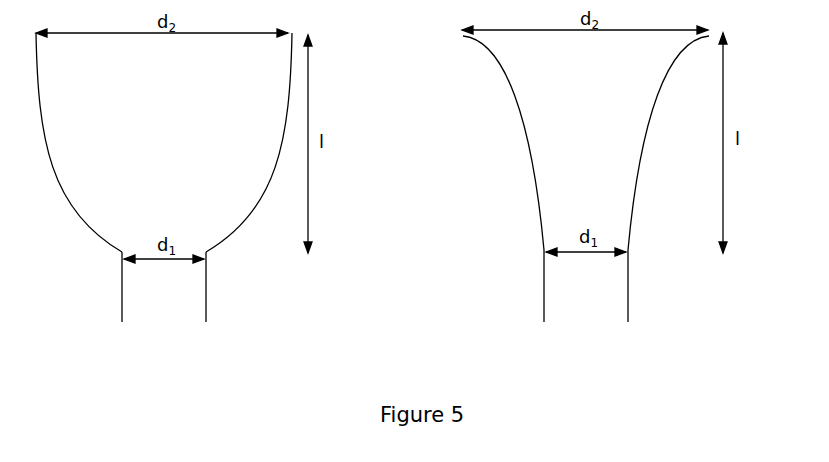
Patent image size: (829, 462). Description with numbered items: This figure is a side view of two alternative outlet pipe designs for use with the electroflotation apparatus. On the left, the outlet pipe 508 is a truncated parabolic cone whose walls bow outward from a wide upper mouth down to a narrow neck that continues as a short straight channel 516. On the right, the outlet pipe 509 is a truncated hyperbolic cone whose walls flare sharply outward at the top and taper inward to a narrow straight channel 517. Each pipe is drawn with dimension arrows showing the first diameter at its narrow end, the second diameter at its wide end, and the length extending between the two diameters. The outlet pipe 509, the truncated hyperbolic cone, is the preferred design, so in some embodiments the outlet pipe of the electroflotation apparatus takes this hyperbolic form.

The outlet pipe 508 is at (260, 272).
The straight channel portion of vent 516 is at (158, 300).
The outlet pipe 509 is at (510, 264).
The straight channel portion of vent 517 is at (585, 288).